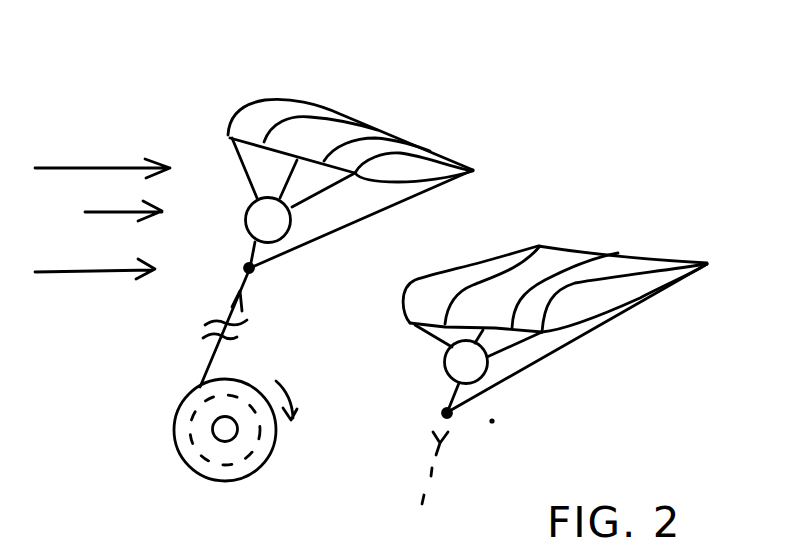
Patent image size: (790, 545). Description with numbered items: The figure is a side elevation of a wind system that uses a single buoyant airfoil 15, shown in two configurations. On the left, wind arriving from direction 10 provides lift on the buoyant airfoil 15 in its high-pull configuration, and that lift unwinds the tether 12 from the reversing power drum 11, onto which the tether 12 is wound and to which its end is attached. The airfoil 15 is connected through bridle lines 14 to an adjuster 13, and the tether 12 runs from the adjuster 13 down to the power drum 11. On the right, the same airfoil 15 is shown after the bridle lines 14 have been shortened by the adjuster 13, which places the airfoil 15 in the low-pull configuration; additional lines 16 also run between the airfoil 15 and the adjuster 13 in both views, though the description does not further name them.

The wind direction 10 is at (102, 219).
The power drum 11 is at (283, 447).
The tether 12 is at (202, 357).
The adjuster 13 is at (257, 229).
The bridle lines 14 is at (235, 173).
The buoyant airfoil 15 is at (326, 134).
The control lines 16 is at (282, 183).